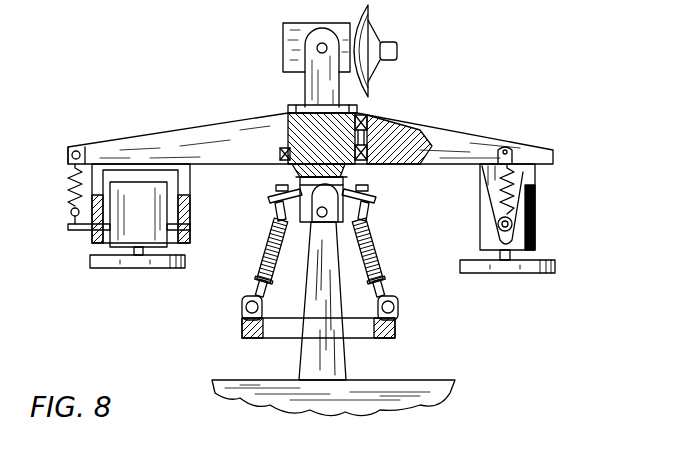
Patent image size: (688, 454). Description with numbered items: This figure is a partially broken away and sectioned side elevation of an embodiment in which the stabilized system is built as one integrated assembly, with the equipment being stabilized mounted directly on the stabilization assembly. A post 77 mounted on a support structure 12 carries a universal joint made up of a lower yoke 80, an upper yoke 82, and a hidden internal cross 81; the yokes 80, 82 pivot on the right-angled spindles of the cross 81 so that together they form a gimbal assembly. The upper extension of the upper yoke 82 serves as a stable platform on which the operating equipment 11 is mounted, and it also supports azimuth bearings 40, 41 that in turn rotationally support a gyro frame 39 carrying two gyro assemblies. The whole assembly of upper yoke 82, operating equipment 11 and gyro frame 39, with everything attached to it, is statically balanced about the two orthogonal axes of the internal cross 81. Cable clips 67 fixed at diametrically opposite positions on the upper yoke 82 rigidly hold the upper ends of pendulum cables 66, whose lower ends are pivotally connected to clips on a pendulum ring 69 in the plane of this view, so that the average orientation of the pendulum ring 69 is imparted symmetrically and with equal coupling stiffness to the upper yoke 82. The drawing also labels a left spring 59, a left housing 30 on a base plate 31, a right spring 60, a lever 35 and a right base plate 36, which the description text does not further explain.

The operating equipment 11 is at (308, 90).
The gyro frame 39 is at (468, 138).
The azimuth bearing 40 is at (372, 118).
The azimuth bearing 41 is at (408, 131).
The left spring 59 is at (72, 186).
The left housing cylinder 30 is at (110, 243).
The left base plate 31 is at (95, 268).
The right spring 60 is at (523, 185).
The right lever 35 is at (534, 226).
The right base plate 36 is at (540, 275).
The upper yoke 82 is at (356, 176).
The lower yoke 80 is at (343, 230).
The internal cross 81 is at (345, 220).
The cable clip 67 is at (268, 200).
The pendulum cable 66 is at (266, 255).
The pendulum ring 69 is at (397, 330).
The post 77 is at (340, 350).
The support structure 12 is at (442, 392).